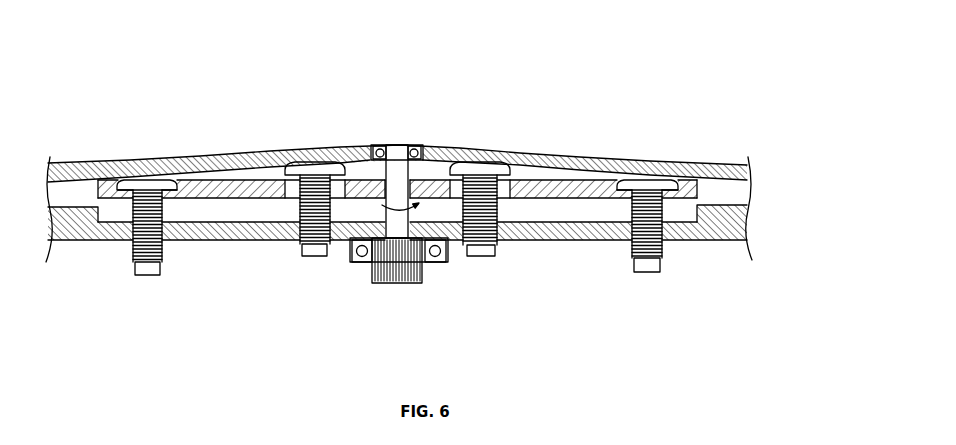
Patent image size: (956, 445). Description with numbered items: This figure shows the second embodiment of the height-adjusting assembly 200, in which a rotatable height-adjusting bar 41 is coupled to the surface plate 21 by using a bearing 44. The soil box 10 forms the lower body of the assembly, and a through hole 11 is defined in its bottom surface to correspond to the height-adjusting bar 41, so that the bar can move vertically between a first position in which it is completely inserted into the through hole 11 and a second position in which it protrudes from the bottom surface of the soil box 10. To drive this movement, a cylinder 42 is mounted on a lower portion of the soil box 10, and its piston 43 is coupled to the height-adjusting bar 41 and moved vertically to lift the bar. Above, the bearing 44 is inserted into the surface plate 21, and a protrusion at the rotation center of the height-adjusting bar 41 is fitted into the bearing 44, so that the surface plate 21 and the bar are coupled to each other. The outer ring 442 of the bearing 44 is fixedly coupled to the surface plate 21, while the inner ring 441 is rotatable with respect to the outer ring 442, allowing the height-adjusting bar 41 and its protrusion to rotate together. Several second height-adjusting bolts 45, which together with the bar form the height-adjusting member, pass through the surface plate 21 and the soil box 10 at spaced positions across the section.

The display device assembly 200 is at (113, 68).
The soil box 10 is at (427, 243).
The through hole 11 is at (587, 212).
The surface plate 21 is at (698, 162).
The height-adjusting bar 41 is at (567, 180).
The cylinder 42 is at (398, 284).
The piston 43 is at (387, 170).
The bearing 44 is at (362, 206).
The inner ring 441 is at (445, 107).
The outer ring 442 is at (417, 145).
The second height-adjusting bolt 45 is at (150, 181).